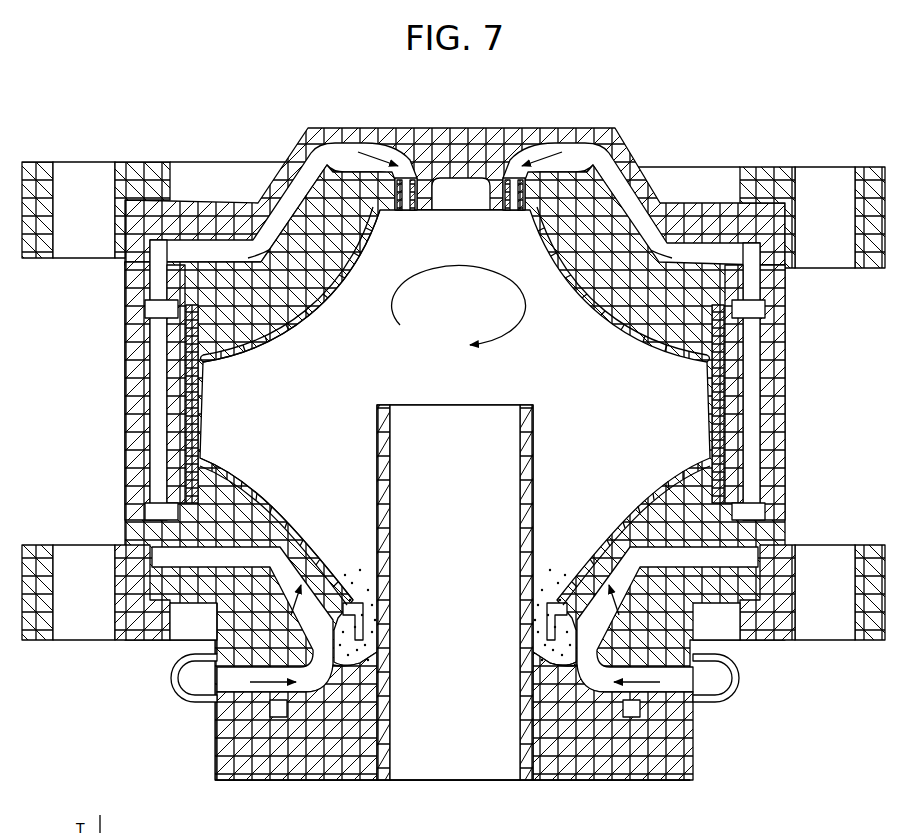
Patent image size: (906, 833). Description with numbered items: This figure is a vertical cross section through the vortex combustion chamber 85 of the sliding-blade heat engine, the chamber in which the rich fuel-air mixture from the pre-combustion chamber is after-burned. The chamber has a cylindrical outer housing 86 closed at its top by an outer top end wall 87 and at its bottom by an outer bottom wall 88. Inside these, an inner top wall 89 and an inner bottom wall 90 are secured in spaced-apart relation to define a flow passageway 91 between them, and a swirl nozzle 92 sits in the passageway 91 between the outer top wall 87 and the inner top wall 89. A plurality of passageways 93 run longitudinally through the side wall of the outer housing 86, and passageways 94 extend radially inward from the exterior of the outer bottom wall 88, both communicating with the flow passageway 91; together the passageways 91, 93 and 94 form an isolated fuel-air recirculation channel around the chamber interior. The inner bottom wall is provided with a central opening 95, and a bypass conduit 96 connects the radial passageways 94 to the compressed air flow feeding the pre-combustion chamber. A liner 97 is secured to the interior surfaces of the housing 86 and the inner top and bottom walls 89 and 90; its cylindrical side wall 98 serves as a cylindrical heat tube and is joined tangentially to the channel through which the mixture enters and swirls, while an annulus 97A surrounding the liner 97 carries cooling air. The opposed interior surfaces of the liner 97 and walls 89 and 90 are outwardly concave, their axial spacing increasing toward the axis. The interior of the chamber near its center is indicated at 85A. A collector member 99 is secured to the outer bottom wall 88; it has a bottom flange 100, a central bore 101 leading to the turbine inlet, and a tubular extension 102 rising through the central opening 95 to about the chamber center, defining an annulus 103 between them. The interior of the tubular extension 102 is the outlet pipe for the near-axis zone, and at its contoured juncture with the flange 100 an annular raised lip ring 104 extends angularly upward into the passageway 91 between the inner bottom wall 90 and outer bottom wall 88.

The vortex combustion chamber 85 is at (680, 158).
The valve chamber 85A is at (478, 393).
The cylindrical outer housing 86 is at (122, 430).
The outer top end wall 87 is at (463, 128).
The outer bottom wall 88 is at (220, 613).
The inner top wall 89 is at (302, 290).
The inner bottom wall 90 is at (250, 510).
The flow passageway 91 is at (718, 257).
The swirl nozzle 92 is at (408, 212).
The passageways 93 is at (163, 372).
The radial passageways 94 is at (217, 685).
The central opening 95 is at (363, 618).
The bypass conduit 96 is at (167, 688).
The liner 97 is at (325, 290).
The annulus 97A is at (275, 337).
The cylindrical side wall 98 is at (200, 373).
The collector member 99 is at (255, 762).
The bottom flange 100 is at (680, 750).
The central bore 101 is at (440, 770).
The tubular extension 102 is at (537, 470).
The annulus 103 is at (546, 603).
The annular raised lip ring 104 is at (545, 652).